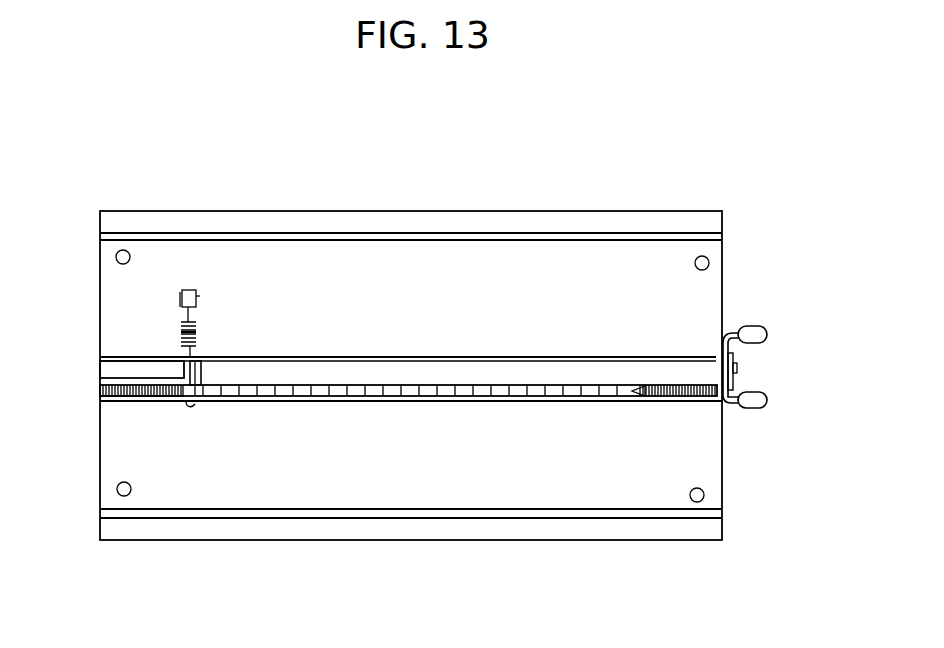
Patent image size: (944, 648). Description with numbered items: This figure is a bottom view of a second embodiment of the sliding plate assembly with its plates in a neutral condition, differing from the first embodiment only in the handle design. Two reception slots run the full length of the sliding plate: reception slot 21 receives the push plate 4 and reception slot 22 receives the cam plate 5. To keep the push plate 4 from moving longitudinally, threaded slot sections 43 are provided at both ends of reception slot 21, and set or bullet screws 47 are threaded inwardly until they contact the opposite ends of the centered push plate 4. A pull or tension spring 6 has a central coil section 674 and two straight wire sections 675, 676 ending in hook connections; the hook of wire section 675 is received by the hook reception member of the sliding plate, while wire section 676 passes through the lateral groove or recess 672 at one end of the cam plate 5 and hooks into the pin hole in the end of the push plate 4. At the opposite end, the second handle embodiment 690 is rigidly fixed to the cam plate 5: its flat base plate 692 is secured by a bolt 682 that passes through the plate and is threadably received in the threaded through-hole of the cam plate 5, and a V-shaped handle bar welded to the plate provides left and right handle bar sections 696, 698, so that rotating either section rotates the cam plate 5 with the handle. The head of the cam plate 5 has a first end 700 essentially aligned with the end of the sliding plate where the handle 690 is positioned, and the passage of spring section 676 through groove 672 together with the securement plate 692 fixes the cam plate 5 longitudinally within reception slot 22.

The push plate 4 is at (522, 394).
The cam plate 5 is at (513, 370).
The pull or tension spring 6 is at (198, 338).
The reception slot 21 is at (97, 393).
The reception slot 22 is at (117, 373).
The threaded slot sections 43 is at (137, 393).
The set or bullet screws 47 is at (153, 393).
The lateral groove or recess 672 is at (203, 373).
The central coil section 674 is at (180, 332).
The straight wire section 675 is at (181, 312).
The straight wire section 676 is at (197, 357).
The bolt 682 is at (737, 368).
The second handle embodiment 690 is at (740, 385).
The flat base plate 692 is at (745, 355).
The left handle bar section 696 is at (728, 408).
The right handle bar section 698 is at (727, 333).
The first end 700 is at (703, 373).